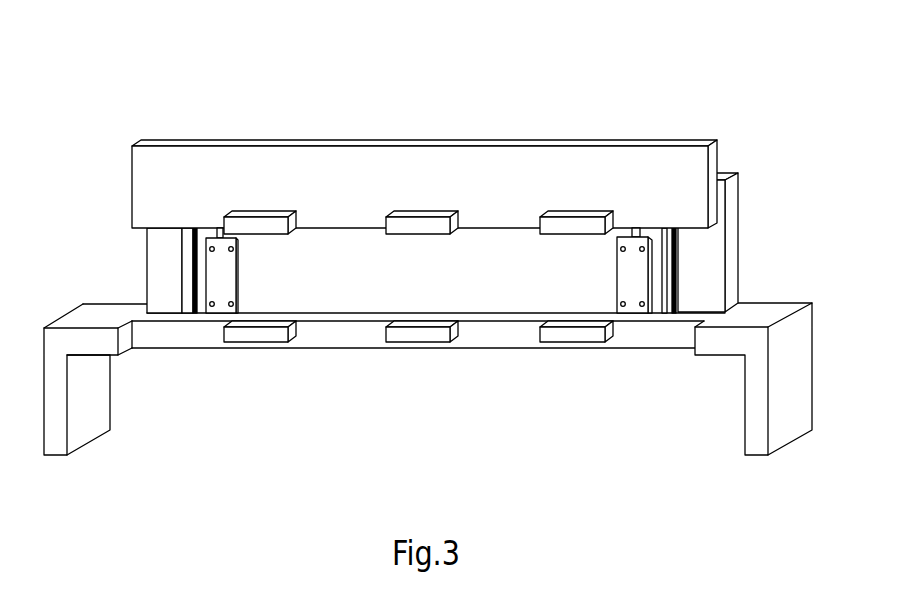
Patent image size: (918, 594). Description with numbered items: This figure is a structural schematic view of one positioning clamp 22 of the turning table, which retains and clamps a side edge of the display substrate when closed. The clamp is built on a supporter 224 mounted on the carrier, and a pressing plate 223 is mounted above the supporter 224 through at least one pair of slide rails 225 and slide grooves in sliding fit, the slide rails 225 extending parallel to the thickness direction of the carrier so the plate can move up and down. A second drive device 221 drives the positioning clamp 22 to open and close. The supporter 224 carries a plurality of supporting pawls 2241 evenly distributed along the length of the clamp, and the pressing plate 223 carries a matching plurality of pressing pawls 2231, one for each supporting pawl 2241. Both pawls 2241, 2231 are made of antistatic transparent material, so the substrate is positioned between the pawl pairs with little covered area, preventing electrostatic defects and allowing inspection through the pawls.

The positioning clamp 22 is at (428, 233).
The pressing plate 223 is at (600, 163).
The pressing pawl 2231 is at (418, 222).
The second drive device 221 is at (229, 272).
The slide rail 225 is at (187, 268).
The supporter 224 is at (712, 338).
The supporting pawl 2241 is at (572, 333).